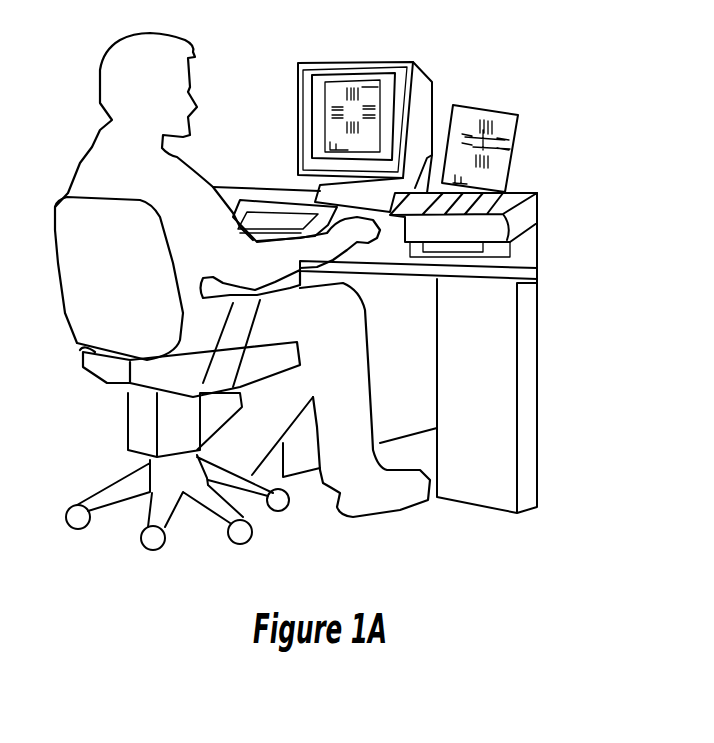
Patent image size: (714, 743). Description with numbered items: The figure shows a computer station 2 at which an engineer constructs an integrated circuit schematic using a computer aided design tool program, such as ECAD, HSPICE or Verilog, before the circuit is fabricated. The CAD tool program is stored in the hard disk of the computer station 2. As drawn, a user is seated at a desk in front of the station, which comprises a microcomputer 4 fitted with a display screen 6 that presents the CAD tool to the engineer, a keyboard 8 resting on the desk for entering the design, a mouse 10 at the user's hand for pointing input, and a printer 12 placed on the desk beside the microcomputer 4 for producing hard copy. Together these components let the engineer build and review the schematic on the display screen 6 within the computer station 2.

The computer station 2 is at (540, 40).
The microcomputer 4 is at (413, 188).
The display screen 6 is at (358, 62).
The keyboard 8 is at (267, 217).
The mouse 10 is at (382, 243).
The printer 12 is at (527, 197).